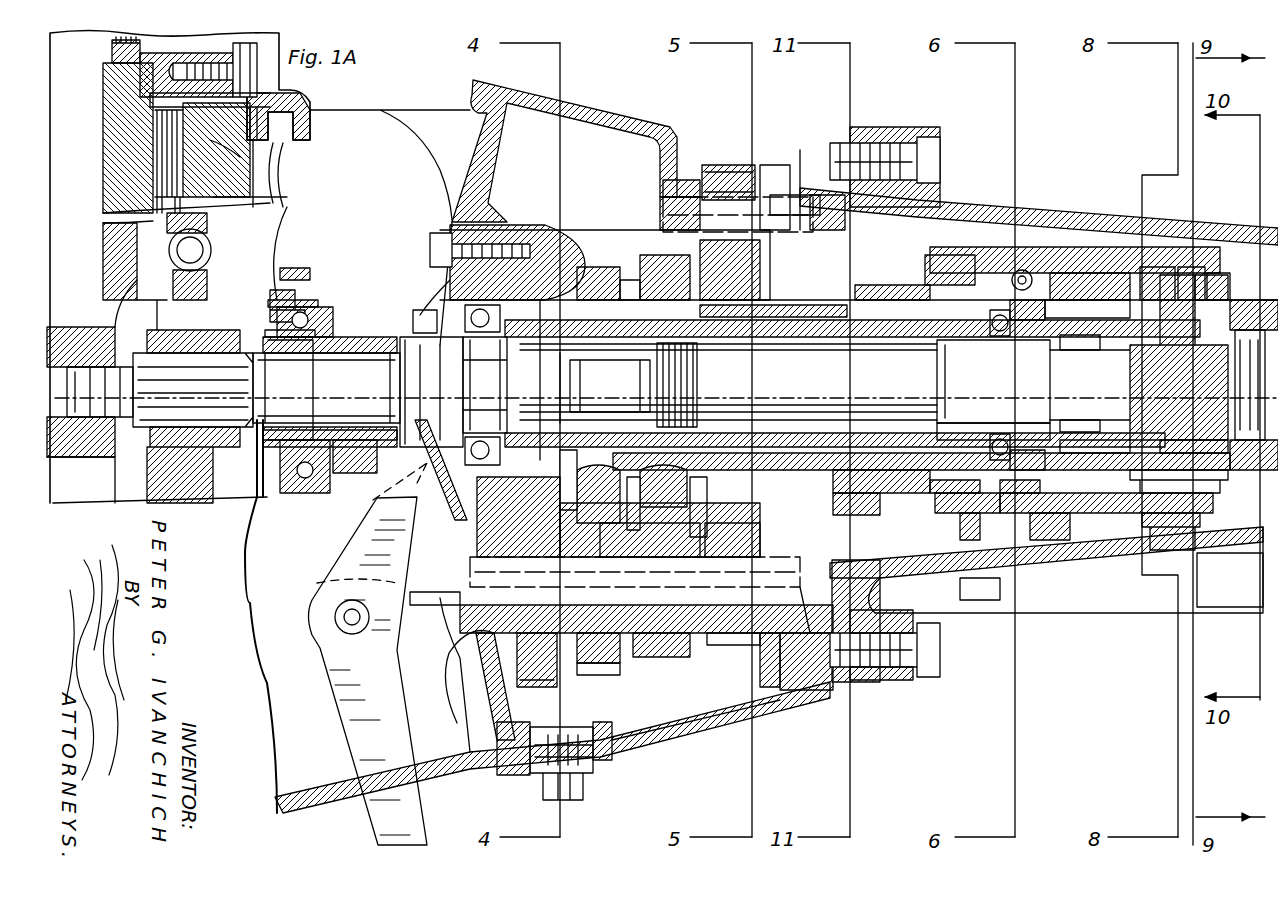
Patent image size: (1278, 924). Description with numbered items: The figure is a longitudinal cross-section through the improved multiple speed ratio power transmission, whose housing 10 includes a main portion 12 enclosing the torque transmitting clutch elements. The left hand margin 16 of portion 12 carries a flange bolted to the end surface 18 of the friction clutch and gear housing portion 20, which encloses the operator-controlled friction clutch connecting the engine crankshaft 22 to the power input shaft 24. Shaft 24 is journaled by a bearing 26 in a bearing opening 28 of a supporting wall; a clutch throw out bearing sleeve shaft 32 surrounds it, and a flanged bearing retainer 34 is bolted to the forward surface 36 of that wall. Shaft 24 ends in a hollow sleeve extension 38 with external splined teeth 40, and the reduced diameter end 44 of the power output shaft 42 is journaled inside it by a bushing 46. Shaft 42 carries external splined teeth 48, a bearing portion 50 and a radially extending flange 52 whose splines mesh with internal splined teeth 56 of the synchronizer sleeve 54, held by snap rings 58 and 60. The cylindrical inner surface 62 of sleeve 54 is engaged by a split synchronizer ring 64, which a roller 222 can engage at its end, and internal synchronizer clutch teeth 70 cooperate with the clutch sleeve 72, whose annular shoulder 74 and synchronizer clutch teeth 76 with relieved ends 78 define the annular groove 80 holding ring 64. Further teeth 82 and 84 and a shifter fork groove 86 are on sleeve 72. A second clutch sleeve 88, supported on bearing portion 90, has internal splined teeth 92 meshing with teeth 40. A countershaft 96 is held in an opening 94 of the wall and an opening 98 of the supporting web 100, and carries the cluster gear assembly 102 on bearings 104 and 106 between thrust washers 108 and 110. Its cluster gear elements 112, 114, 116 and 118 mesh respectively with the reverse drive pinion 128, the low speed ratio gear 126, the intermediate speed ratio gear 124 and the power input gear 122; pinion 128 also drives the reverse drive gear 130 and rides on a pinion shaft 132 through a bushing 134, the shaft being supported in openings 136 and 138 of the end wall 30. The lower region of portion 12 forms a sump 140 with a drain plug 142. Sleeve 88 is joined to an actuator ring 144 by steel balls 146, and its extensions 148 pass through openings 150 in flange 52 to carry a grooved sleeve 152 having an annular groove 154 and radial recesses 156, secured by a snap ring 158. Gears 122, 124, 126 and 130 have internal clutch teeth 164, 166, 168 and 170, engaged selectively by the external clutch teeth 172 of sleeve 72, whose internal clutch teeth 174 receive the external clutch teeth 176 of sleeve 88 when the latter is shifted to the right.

The housing 10 is at (597, 97).
The main housing portion 12 is at (985, 192).
The left hand margin 16 is at (865, 140).
The end surface 18 is at (825, 130).
The friction clutch and gear housing portion 20 is at (530, 83).
The crankshaft 22 is at (98, 233).
The power input shaft 24 is at (225, 325).
The bearing 26 is at (308, 295).
The bearing opening 28 is at (313, 275).
The end wall 30 is at (661, 150).
The clutch throw out bearing sleeve shaft 32 is at (364, 297).
The flanged bearing retainer 34 is at (323, 227).
The forward surface 36 is at (323, 265).
The hollow sleeve extension 38 is at (593, 490).
The external splined teeth 40 is at (645, 470).
The power output shaft 42 is at (1082, 510).
The reduced diameter end 44 is at (540, 389).
The bushing 46 is at (700, 395).
The external splined teeth 48 is at (730, 270).
The bearing portion 50 is at (1070, 438).
The radially extending flange 52 is at (1160, 525).
The synchronizer sleeve 54 is at (1097, 247).
The internal splined teeth 56 is at (1190, 267).
The snap ring 58 is at (1155, 267).
The snap ring 60 is at (1220, 275).
The cylindrical inner surface 62 is at (1095, 545).
The split synchronizer ring 64 is at (995, 568).
The internal synchronizer clutch teeth 70 is at (938, 502).
The clutch sleeve 72 is at (956, 437).
The annular shoulder 74 is at (1050, 555).
The synchronizer clutch teeth 76 is at (960, 540).
The relieved end 78 is at (1007, 495).
The annular groove 80 is at (977, 588).
The synchronizer clutch teeth 82 is at (940, 502).
The synchronizer clutch teeth 84 is at (890, 285).
The groove 86 is at (906, 268).
The clutch sleeve 88 is at (1005, 443).
The bearing portion 90 is at (980, 327).
The internal splined teeth 92 is at (525, 343).
The opening 94 is at (392, 550).
The countershaft 96 is at (605, 675).
The opening 98 is at (845, 525).
The supporting web 100 is at (818, 506).
The cluster gear assembly 102 is at (500, 715).
The bearing 104 is at (750, 657).
The bearing 106 is at (515, 655).
The thrust washer 108 is at (768, 665).
The thrust washer 110 is at (485, 625).
The cluster gear element 112 is at (682, 662).
The cluster gear element 114 is at (672, 660).
The cluster gear element 116 is at (595, 665).
The cluster gear element 118 is at (528, 692).
The power input gear 122 is at (538, 560).
The intermediate speed ratio gear 124 is at (563, 542).
The low speed ratio gear 126 is at (630, 542).
The reverse drive pinion 128 is at (710, 167).
The reverse drive gear 130 is at (707, 547).
The pinion shaft 132 is at (765, 160).
The bushing 134 is at (735, 165).
The opening 136 is at (675, 183).
The opening 138 is at (840, 216).
The sump 140 is at (678, 710).
The drain plug 142 is at (593, 785).
The actuator ring 144 is at (1068, 335).
The steel balls 146 is at (1003, 330).
The axially extending extensions 148 is at (1130, 313).
The openings 150 is at (1160, 481).
The grooved sleeve 152 is at (1240, 512).
The annular groove 154 is at (1235, 470).
The radial recesses 156 is at (1179, 357).
The snap ring 158 is at (1230, 442).
The internal clutch teeth 164 is at (465, 245).
The internal clutch teeth 166 is at (613, 282).
The internal clutch teeth 168 is at (747, 220).
The internal clutch teeth 170 is at (728, 300).
The external clutch teeth 172 is at (640, 255).
The internal clutch teeth 174 is at (605, 388).
The external clutch teeth 176 is at (580, 267).
The roller 222 is at (1023, 270).